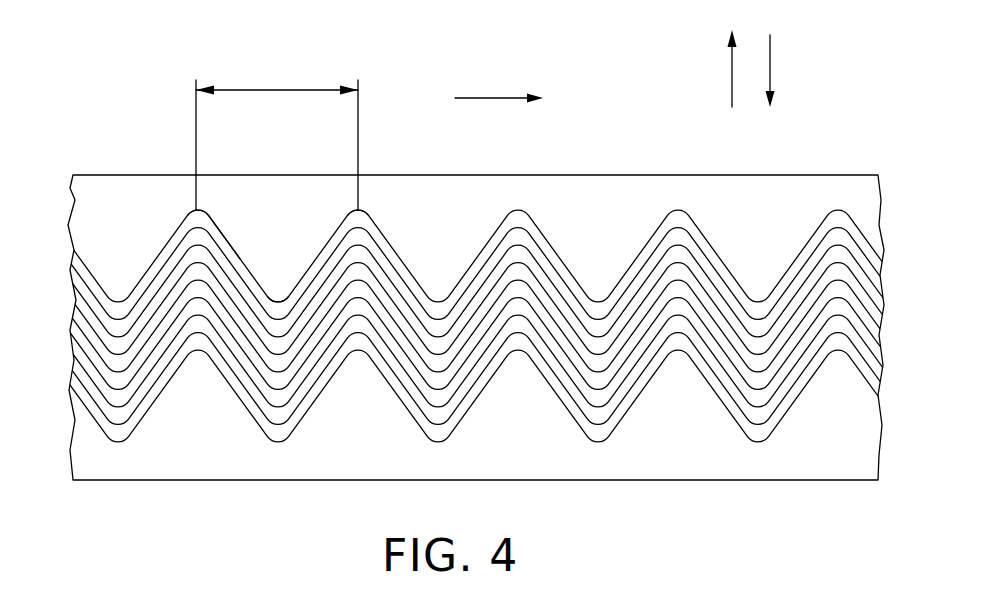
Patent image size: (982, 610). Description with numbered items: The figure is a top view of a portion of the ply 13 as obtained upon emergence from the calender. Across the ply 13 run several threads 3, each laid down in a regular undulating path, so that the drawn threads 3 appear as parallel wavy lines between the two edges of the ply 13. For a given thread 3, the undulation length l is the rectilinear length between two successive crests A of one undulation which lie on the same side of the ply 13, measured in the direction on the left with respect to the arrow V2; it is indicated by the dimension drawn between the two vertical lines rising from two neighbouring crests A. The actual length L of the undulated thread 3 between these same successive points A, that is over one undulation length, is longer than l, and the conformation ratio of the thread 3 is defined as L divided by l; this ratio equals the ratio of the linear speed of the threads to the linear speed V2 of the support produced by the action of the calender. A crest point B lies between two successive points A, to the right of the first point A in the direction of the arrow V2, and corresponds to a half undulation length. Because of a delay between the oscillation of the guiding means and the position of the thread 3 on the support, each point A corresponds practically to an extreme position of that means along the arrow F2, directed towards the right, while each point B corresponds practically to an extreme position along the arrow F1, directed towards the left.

The ply 13 is at (640, 175).
The thread 3 is at (555, 250).
The crest A is at (196, 209).
The crest point B is at (276, 301).
The actual length of the undulated thread L is at (237, 252).
The undulation length l is at (277, 136).
The linear speed of the support V2 is at (499, 82).
The arrow of oscillation directed towards the left F1 is at (731, 73).
The arrow of oscillation directed towards the right F2 is at (772, 70).